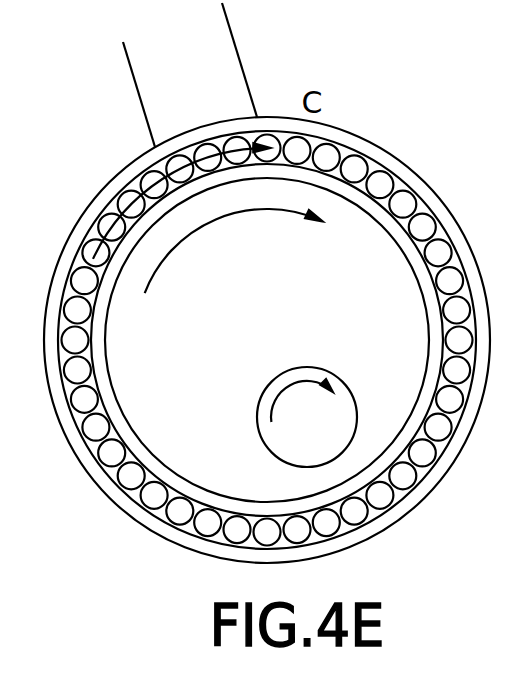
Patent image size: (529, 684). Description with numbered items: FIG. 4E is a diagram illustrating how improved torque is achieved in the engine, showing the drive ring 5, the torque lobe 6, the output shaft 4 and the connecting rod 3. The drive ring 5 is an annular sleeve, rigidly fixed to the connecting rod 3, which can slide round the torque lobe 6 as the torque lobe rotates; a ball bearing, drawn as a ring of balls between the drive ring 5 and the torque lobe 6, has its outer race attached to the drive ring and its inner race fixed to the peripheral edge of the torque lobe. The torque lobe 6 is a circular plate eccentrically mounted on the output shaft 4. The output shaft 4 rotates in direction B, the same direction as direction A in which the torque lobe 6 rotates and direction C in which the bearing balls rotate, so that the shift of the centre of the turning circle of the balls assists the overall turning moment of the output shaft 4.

The connecting rod 3 is at (167, 96).
The output shaft 4 is at (318, 452).
The drive ring 5 is at (355, 148).
The torque lobe 6 is at (238, 303).